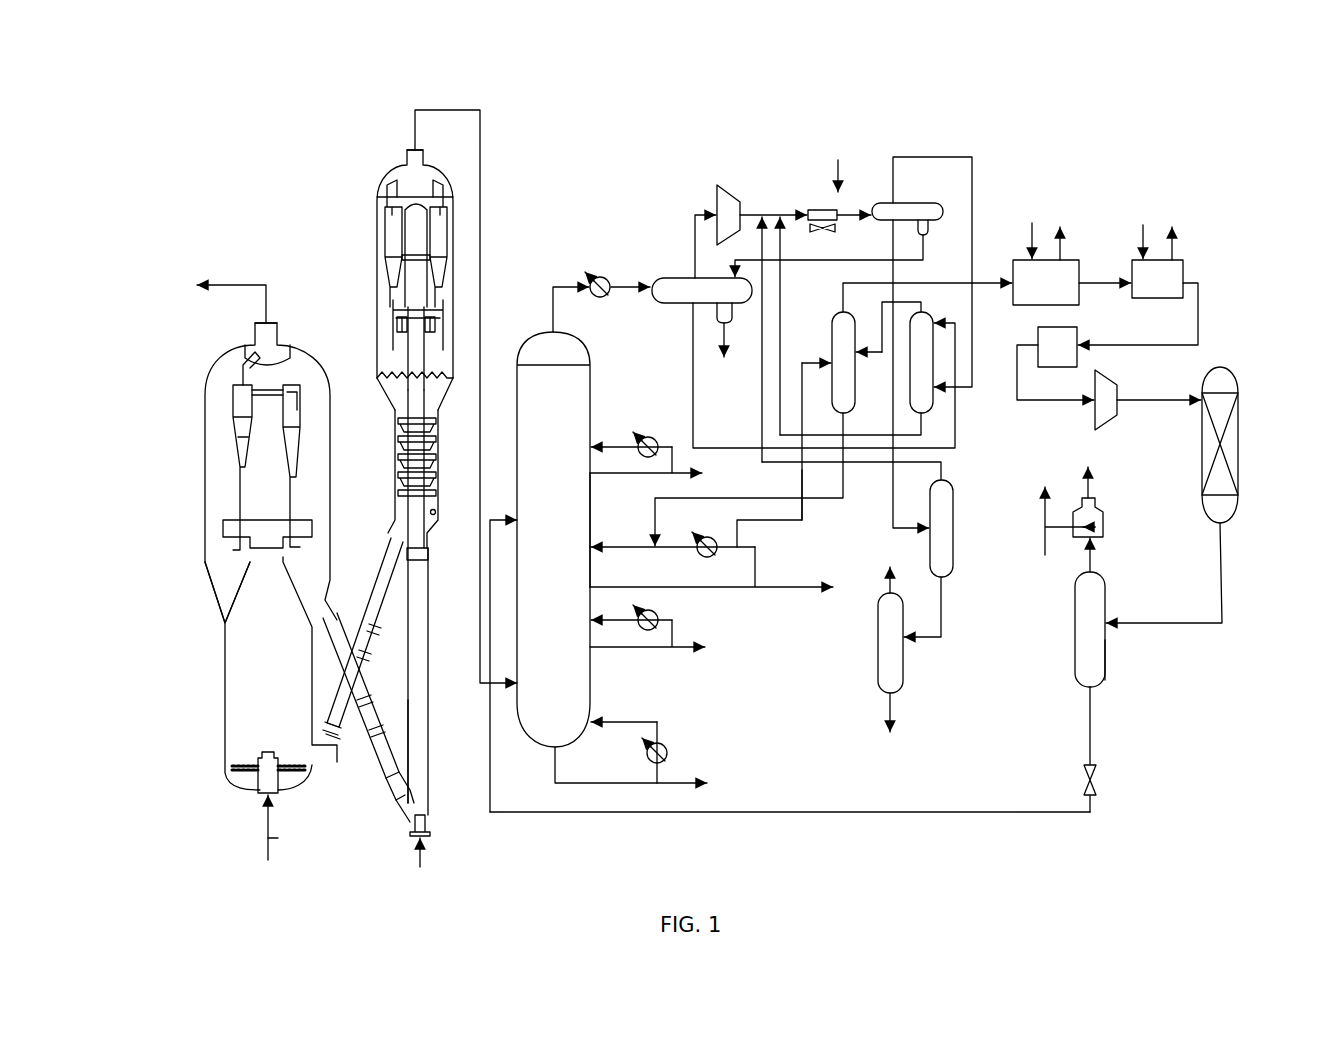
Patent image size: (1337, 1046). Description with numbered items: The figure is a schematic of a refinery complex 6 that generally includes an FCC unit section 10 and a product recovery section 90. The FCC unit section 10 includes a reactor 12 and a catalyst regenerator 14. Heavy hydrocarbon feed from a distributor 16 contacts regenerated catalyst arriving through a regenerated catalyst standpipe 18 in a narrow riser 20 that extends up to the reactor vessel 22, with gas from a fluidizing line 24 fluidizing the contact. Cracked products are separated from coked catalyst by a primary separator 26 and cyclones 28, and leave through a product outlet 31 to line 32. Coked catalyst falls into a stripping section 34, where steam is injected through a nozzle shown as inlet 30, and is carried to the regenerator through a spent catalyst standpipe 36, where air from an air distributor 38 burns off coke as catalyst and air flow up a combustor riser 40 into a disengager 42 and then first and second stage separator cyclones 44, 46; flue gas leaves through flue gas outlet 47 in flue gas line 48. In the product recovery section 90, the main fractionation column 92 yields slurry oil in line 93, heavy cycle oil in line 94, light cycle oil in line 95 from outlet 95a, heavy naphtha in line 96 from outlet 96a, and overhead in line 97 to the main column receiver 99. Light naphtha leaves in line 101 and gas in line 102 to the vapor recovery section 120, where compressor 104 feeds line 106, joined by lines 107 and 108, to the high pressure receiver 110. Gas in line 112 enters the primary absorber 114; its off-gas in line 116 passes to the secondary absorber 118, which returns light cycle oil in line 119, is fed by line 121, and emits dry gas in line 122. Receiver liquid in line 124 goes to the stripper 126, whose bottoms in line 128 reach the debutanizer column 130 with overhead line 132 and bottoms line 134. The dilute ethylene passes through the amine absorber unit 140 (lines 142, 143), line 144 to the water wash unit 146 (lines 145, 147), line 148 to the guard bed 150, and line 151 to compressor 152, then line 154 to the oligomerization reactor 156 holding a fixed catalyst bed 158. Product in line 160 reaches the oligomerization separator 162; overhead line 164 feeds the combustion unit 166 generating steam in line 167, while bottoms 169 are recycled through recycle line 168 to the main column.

The refinery complex 6 is at (1095, 155).
The FCC unit section 10 is at (237, 183).
The reactor 12 is at (380, 190).
The catalyst regenerator 14 is at (190, 348).
The distributor 16 is at (433, 720).
The regenerated catalyst standpipe 18 is at (372, 752).
The riser 20 is at (408, 630).
The reactor vessel 22 is at (385, 333).
The fluidizing line 24 is at (418, 870).
The primary separator 26 is at (410, 357).
The cyclones 28 is at (390, 240).
The stripping gas inlet 30 is at (291, 806).
The product outlet 31 is at (404, 152).
The line 32 is at (470, 105).
The stripping section 34 is at (440, 462).
The spent catalyst standpipe 36 is at (385, 575).
The air distributor 38 is at (258, 765).
The combustor riser 40 is at (215, 563).
The disengager 42 is at (228, 522).
The first stage separator cyclone 44 is at (305, 425).
The second stage separator cyclone 46 is at (240, 420).
The flue gas outlet 47 is at (250, 335).
The flue gas line 48 is at (230, 285).
The product recovery section 90 is at (640, 170).
The main fractionation column 92 is at (590, 373).
The line 93 is at (642, 780).
The line 94 is at (672, 655).
The line 95 is at (711, 577).
The light cycle oil outlet 95a is at (598, 570).
The line 96 is at (660, 475).
The heavy naphtha outlet 96a is at (592, 470).
The overhead line 97 is at (553, 308).
The main column receiver 99 is at (663, 280).
The line 101 is at (688, 335).
The line 102 is at (695, 225).
The compressor 104 is at (733, 188).
The line 106 is at (785, 210).
The line 107 is at (802, 363).
The overhead line 108 is at (762, 413).
The high pressure receiver 110 is at (935, 203).
The line 112 is at (958, 157).
The primary absorber 114 is at (950, 326).
The line 116 is at (880, 355).
The secondary absorber 118 is at (832, 330).
The line 119 is at (843, 475).
The vapor recovery section 120 is at (835, 163).
The line 121 is at (802, 490).
The line 122 is at (843, 290).
The line 124 is at (895, 250).
The stripper 126 is at (953, 495).
The line 128 is at (941, 622).
The debutanizer column 130 is at (878, 660).
The line 132 is at (885, 582).
The line 134 is at (888, 712).
The amine absorber unit 140 is at (1079, 293).
The line 142 is at (1032, 228).
The line 143 is at (1062, 242).
The line 144 is at (1096, 280).
The line 145 is at (1143, 230).
The water wash unit 146 is at (1140, 298).
The line 147 is at (1173, 248).
The line 148 is at (1205, 295).
The guard bed 150 is at (1038, 327).
The line 151 is at (1040, 405).
The compressor 152 is at (1112, 380).
The line 154 is at (1145, 405).
The oligomerization reactor 156 is at (1238, 372).
The fixed catalyst bed 158 is at (1240, 442).
The line 160 is at (1220, 582).
The oligomerization separator 162 is at (1075, 628).
The overhead line 164 is at (1095, 563).
The combustion unit 166 is at (1103, 520).
The line 167 is at (1045, 527).
The recycle line 168 is at (1090, 733).
The bottoms 169 is at (1105, 668).